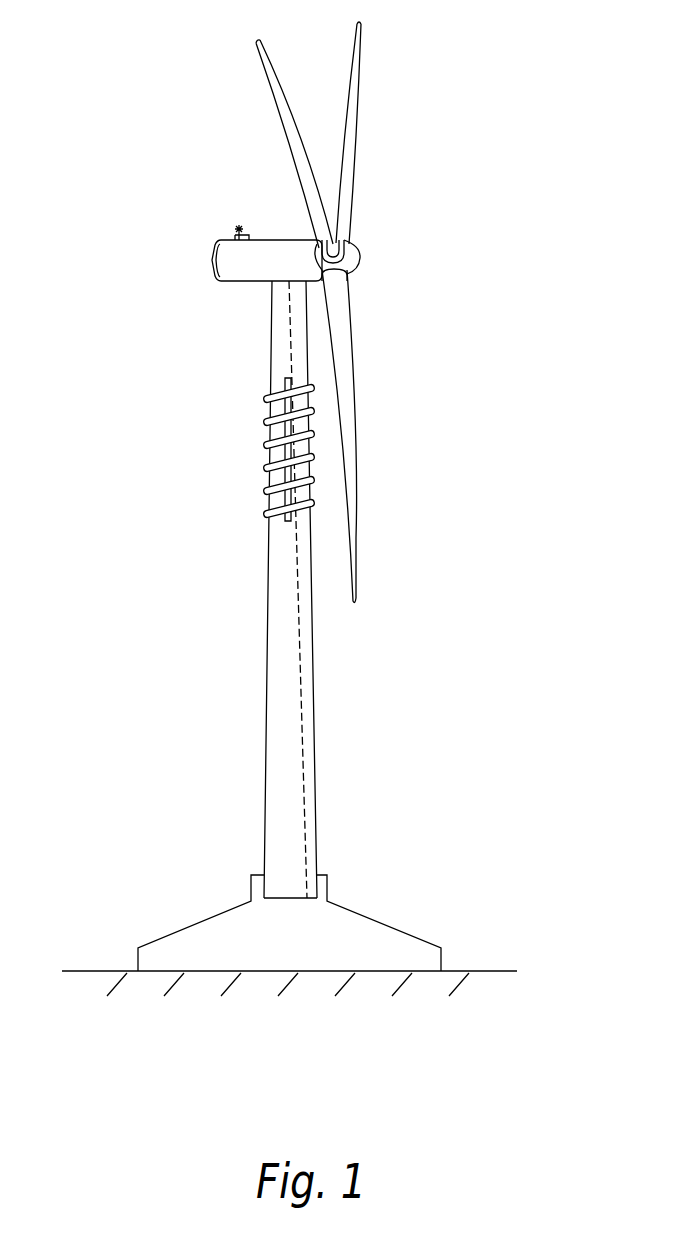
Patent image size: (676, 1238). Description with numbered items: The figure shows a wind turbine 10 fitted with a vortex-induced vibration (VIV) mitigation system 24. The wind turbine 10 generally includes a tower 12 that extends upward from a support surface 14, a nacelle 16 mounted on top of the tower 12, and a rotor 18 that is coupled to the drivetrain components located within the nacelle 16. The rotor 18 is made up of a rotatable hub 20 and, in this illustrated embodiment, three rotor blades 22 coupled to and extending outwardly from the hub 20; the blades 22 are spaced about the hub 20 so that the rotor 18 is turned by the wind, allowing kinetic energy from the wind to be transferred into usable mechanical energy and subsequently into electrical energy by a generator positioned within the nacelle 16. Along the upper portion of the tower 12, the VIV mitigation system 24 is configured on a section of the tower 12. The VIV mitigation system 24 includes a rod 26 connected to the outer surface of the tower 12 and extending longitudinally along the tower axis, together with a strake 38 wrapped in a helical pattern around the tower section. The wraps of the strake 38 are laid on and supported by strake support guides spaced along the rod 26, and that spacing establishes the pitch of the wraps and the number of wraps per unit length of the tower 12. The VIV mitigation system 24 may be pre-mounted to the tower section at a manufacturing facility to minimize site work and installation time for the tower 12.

The wind turbine 10 is at (471, 74).
The tower 12 is at (278, 660).
The support surface 14 is at (499, 962).
The nacelle 16 is at (243, 288).
The rotor 18 is at (373, 237).
The rotatable hub 20 is at (358, 268).
The rotor blade 22 is at (299, 132).
The vortex-induced vibration (VIV) mitigation system 24 is at (178, 440).
The rod 26 is at (285, 381).
The strake 38 is at (265, 493).